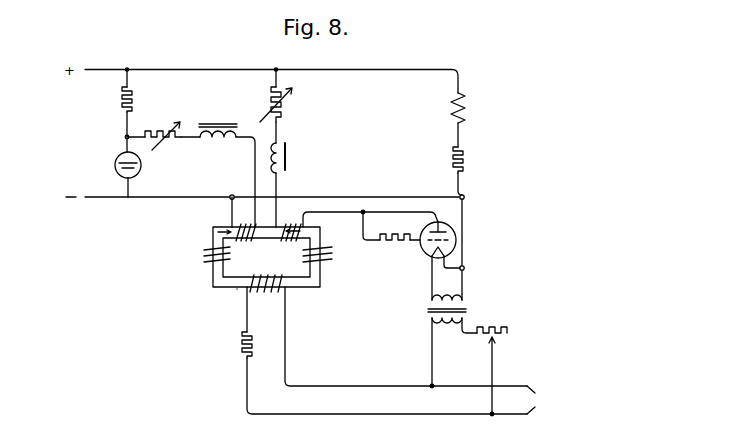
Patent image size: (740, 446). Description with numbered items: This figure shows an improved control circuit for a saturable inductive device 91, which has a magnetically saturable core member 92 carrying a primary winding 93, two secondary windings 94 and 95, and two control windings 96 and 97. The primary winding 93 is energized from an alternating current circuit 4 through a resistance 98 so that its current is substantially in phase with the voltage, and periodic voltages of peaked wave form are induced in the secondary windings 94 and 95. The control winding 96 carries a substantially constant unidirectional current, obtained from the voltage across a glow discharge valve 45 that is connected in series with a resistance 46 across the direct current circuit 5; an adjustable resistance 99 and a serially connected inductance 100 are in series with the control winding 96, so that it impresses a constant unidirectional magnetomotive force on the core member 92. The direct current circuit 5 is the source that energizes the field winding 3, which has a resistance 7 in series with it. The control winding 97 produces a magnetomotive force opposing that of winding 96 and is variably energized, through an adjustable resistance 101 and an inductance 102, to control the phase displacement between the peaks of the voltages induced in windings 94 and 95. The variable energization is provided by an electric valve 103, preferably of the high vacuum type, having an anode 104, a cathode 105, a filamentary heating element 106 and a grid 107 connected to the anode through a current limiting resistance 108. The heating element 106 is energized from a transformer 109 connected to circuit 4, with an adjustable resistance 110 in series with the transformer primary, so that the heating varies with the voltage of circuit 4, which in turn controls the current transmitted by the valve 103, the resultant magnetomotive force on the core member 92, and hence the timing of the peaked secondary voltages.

The field winding 3 is at (470, 106).
The alternating current circuit 4 is at (546, 392).
The source of direct current 5 is at (207, 70).
The resistance 7 is at (466, 160).
The glow discharge valve 45 is at (142, 168).
The resistance 46 is at (134, 104).
The saturable inductive device 91 is at (268, 261).
The magnetically saturable core member 92 is at (237, 289).
The primary winding 93 is at (275, 294).
The secondary winding 94 is at (330, 256).
The secondary winding 95 is at (205, 258).
The control winding 96 is at (242, 224).
The control winding 97 is at (302, 216).
The resistance 98 is at (243, 344).
The adjustable resistance 99 is at (163, 125).
The inductance 100 is at (218, 144).
The adjustable resistance 101 is at (287, 109).
The inductance 102 is at (282, 172).
The electric valve 103 is at (441, 222).
The anode 104 is at (427, 232).
The cathode 105 is at (432, 256).
The filamentary heating element 106 is at (452, 253).
The grid 107 is at (455, 228).
The current limiting resistance 108 is at (390, 252).
The transformer 109 is at (430, 310).
The adjustable resistance 110 is at (505, 334).